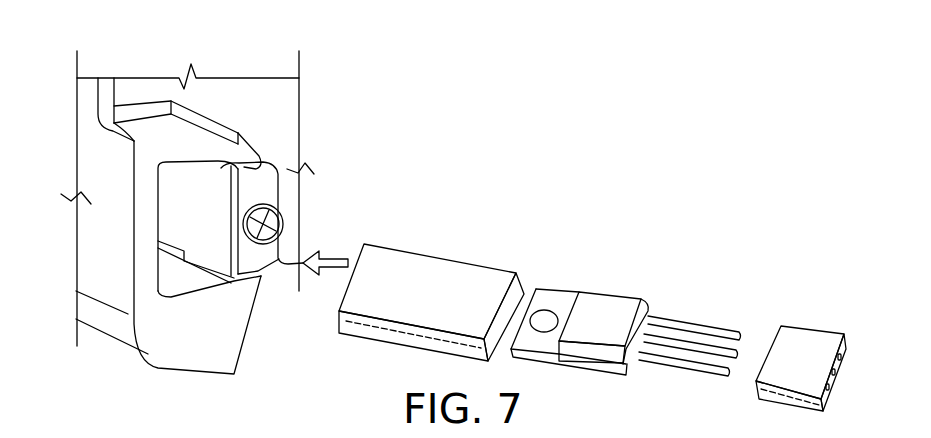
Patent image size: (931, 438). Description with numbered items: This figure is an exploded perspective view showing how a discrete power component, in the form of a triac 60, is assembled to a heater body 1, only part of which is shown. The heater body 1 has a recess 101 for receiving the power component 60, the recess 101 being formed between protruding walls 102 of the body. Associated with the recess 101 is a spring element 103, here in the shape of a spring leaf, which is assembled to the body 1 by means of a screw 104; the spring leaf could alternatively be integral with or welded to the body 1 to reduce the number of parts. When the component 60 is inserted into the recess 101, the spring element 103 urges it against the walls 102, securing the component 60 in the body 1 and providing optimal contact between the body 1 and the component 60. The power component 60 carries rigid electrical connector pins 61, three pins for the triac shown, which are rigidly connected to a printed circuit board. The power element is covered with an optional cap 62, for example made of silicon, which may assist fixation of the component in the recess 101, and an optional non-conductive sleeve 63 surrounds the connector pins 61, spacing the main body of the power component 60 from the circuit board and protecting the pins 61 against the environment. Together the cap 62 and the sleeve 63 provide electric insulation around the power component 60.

The heater body 1 is at (271, 46).
The recess 101 is at (195, 280).
The protruding walls 102 is at (143, 207).
The spring element 103 is at (260, 186).
The screw 104 is at (278, 226).
The triac 60 is at (603, 308).
The electrical connector pins 61 is at (653, 316).
The cap 62 is at (430, 280).
The non conductive sleeve 63 is at (802, 342).